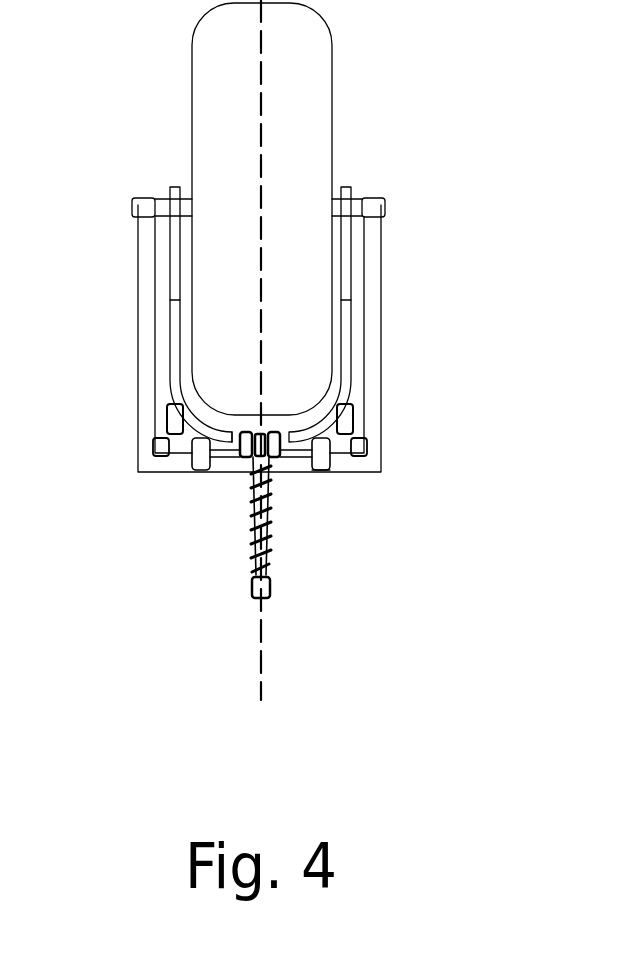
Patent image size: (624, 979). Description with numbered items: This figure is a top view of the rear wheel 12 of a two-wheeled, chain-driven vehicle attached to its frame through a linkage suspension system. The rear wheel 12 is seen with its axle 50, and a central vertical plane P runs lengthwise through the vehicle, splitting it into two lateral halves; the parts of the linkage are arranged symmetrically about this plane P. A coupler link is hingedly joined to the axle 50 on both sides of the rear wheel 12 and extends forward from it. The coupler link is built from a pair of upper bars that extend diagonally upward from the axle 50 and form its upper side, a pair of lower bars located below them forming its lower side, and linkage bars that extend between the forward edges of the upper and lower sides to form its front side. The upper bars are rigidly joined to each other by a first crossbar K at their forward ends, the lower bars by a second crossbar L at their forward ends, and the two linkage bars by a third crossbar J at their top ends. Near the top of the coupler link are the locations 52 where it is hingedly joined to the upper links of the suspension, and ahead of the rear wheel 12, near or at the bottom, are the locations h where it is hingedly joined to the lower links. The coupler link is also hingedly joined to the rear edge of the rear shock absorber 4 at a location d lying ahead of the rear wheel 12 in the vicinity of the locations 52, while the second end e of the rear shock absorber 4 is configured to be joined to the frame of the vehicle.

The rear wheel 12 is at (212, 72).
The central vertical plane P is at (262, 110).
The axle 50 is at (158, 212).
The first crossbar K is at (232, 440).
The locations h is at (178, 420).
The locations 52 is at (160, 450).
The third crossbar J is at (223, 452).
The location d is at (275, 462).
The rear shock absorber 4 is at (253, 562).
The second end e is at (270, 595).
The second crossbar L is at (342, 467).